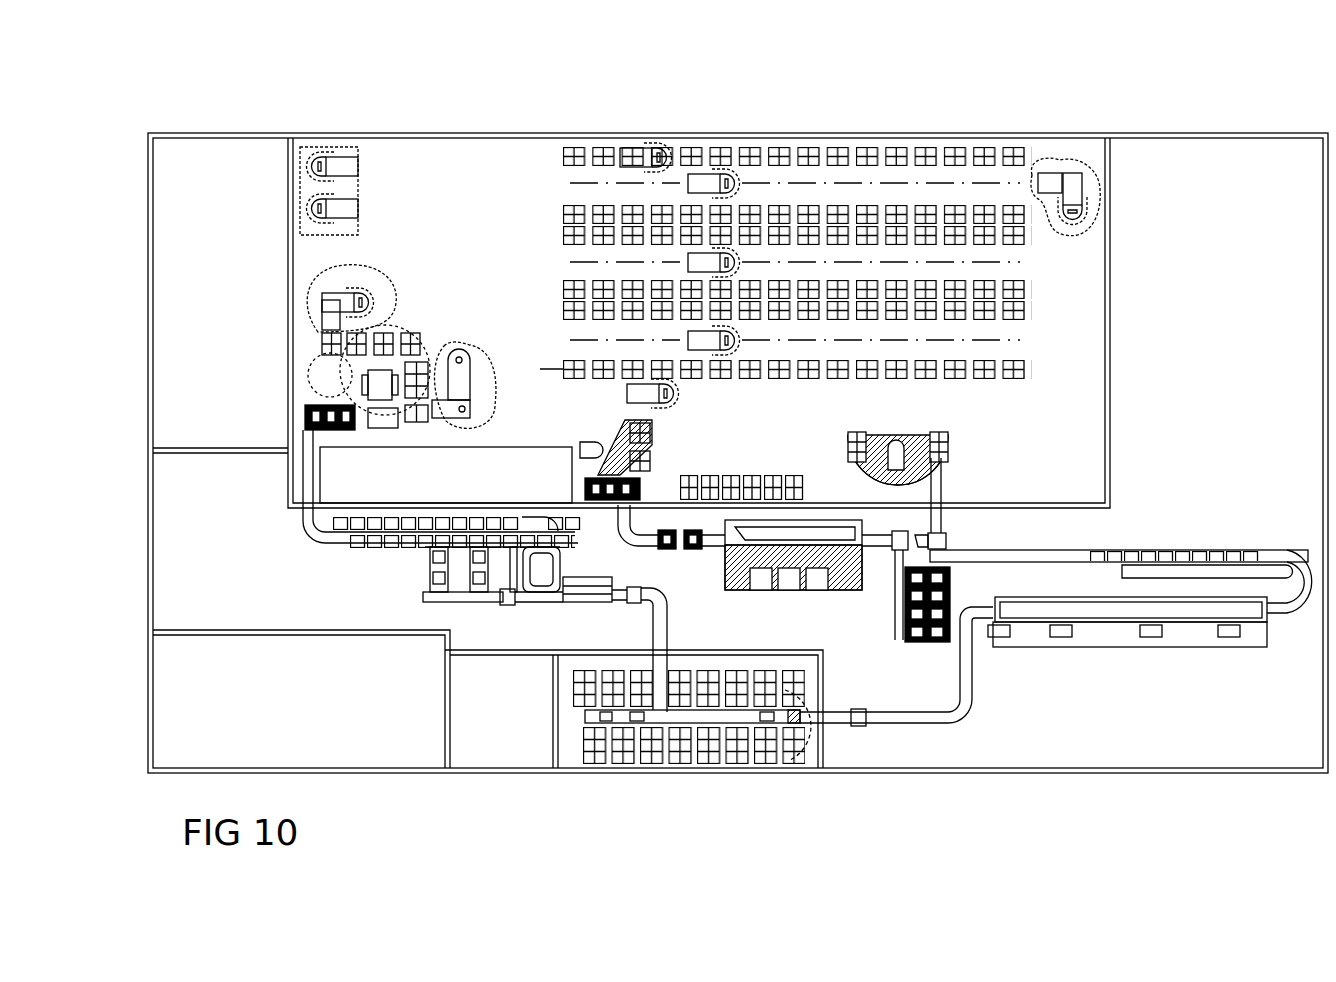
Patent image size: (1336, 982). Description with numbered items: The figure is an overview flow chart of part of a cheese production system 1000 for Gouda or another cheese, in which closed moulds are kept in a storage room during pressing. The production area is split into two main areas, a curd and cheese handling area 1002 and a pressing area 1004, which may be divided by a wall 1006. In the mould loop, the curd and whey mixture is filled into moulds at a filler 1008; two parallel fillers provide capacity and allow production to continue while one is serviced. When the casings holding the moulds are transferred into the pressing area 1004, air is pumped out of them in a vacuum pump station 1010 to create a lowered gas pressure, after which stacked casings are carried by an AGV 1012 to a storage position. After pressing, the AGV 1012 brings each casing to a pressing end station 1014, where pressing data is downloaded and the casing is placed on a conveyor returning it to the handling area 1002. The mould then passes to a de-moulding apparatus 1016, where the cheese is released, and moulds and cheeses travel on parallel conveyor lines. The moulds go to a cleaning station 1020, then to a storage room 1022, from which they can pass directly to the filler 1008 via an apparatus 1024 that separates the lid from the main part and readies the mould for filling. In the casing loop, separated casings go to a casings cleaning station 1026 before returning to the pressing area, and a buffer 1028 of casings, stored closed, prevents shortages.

The cheese production system 1000 is at (413, 95).
The curd and cheese handling area 1002 is at (162, 600).
The pressing area 1004 is at (525, 136).
The wall 1006 is at (1100, 152).
The filler 1008 is at (425, 586).
The vacuum pump station 1010 is at (402, 372).
The AGV 1012 is at (340, 168).
The pressing end station 1014 is at (902, 438).
The de-moulding apparatus 1016 is at (1127, 553).
The cleaning station 1020 is at (1107, 648).
The storage room 1022 is at (687, 770).
The apparatus separating the lid and the main part 1024 is at (588, 603).
The casings cleaning station 1026 is at (846, 590).
The buffer 1028 is at (738, 478).